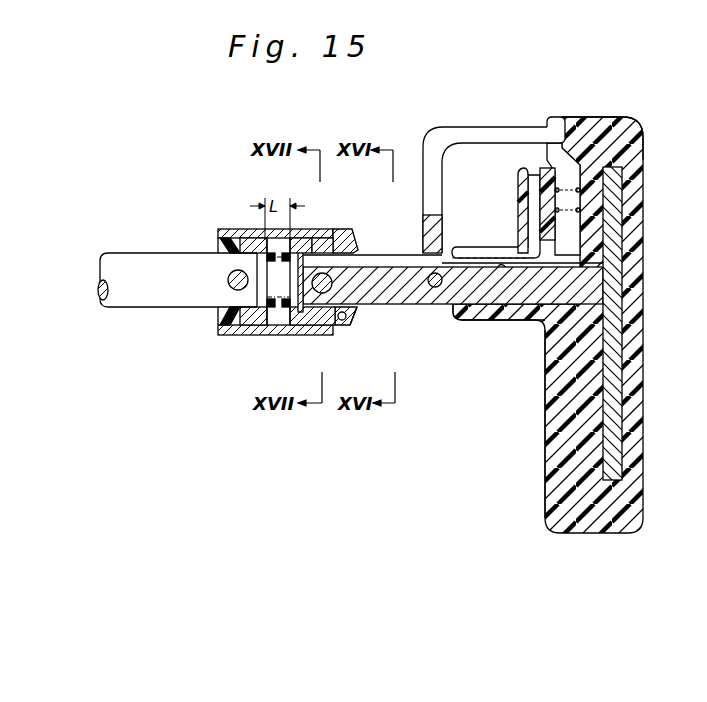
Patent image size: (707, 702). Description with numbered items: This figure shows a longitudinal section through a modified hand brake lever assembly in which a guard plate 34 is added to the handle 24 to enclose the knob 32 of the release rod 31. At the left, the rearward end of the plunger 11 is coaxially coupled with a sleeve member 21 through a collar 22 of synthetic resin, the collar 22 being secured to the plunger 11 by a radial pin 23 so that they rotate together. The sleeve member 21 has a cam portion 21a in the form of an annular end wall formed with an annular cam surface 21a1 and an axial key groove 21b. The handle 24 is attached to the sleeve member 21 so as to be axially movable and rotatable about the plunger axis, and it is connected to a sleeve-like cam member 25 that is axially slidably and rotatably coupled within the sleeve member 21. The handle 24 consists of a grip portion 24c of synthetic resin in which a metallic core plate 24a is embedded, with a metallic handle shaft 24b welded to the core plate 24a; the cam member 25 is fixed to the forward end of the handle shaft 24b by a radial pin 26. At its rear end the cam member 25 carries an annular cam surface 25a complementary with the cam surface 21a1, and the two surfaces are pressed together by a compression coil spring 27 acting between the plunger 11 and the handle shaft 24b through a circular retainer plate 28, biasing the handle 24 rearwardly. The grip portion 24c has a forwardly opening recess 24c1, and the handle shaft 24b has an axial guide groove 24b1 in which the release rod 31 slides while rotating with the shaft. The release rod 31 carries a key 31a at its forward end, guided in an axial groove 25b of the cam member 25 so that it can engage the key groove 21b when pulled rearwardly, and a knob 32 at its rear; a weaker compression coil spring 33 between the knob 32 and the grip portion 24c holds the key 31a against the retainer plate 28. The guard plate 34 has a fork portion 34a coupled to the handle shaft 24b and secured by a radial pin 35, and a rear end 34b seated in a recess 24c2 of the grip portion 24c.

The plunger 11 is at (100, 273).
The sleeve member 21 is at (240, 328).
The cam portion 21a is at (352, 320).
The annular cam surface 21a1 is at (348, 323).
The axial key groove 21b is at (360, 251).
The collar 22 is at (222, 316).
The radial pin 23 is at (230, 280).
The handle 24 is at (643, 224).
The metallic core plate 24a is at (612, 263).
The metallic handle shaft 24b is at (483, 312).
The axial guide groove 24b1 is at (503, 265).
The grip portion 24c is at (553, 422).
The forwardly opening recess 24c1 is at (603, 165).
The recess 24c2 is at (586, 120).
The cam member 25 is at (308, 318).
The annular cam surface 25a is at (345, 316).
The axial groove 25b is at (300, 250).
The radial pin 26 is at (322, 294).
The compression coil spring 27 is at (285, 305).
The circular retainer plate 28 is at (295, 280).
The release rod 31 is at (412, 258).
The key 31a is at (332, 248).
The knob 32 is at (521, 178).
The compression coil spring 33 is at (585, 190).
The guard plate 34 is at (465, 132).
The fork portion 34a is at (443, 247).
The rear end 34b is at (556, 130).
The radial pin 35 is at (435, 288).